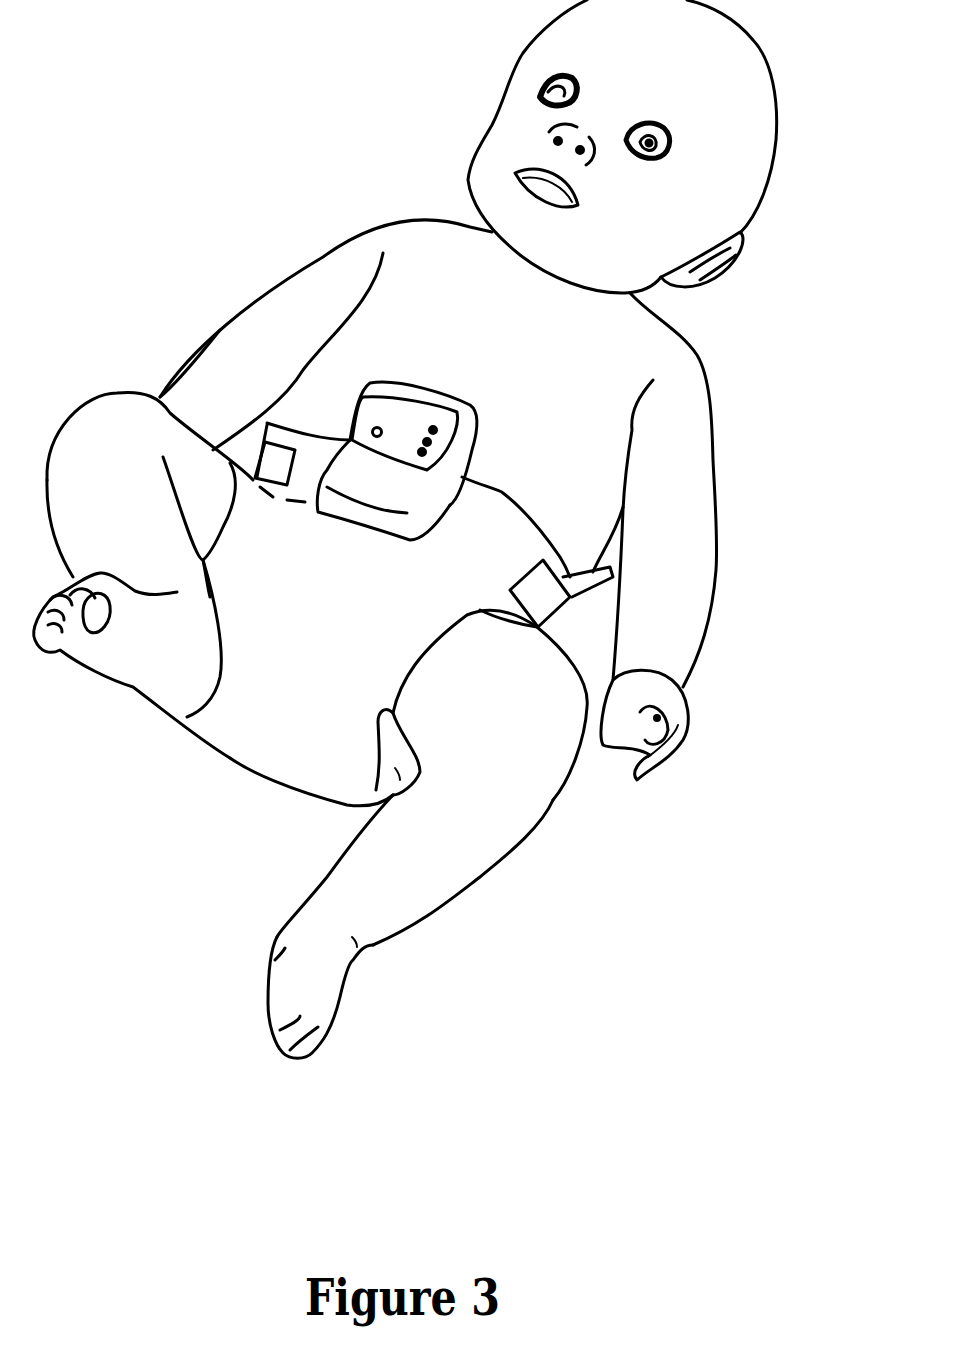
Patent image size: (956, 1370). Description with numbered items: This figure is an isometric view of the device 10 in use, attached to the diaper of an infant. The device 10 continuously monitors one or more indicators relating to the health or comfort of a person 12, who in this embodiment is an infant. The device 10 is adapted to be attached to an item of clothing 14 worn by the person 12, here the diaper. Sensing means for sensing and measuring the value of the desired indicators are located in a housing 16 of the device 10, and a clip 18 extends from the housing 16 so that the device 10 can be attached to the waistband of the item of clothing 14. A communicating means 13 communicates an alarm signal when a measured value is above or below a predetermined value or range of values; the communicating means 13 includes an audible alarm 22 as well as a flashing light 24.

The device 10 is at (452, 484).
The person 12 is at (567, 357).
The communicating means 13 is at (375, 430).
The item of clothing 14 is at (349, 735).
The housing 16 is at (340, 517).
The clip 18 is at (475, 473).
The audible alarm 22 is at (437, 428).
The flashing light 24 is at (424, 458).